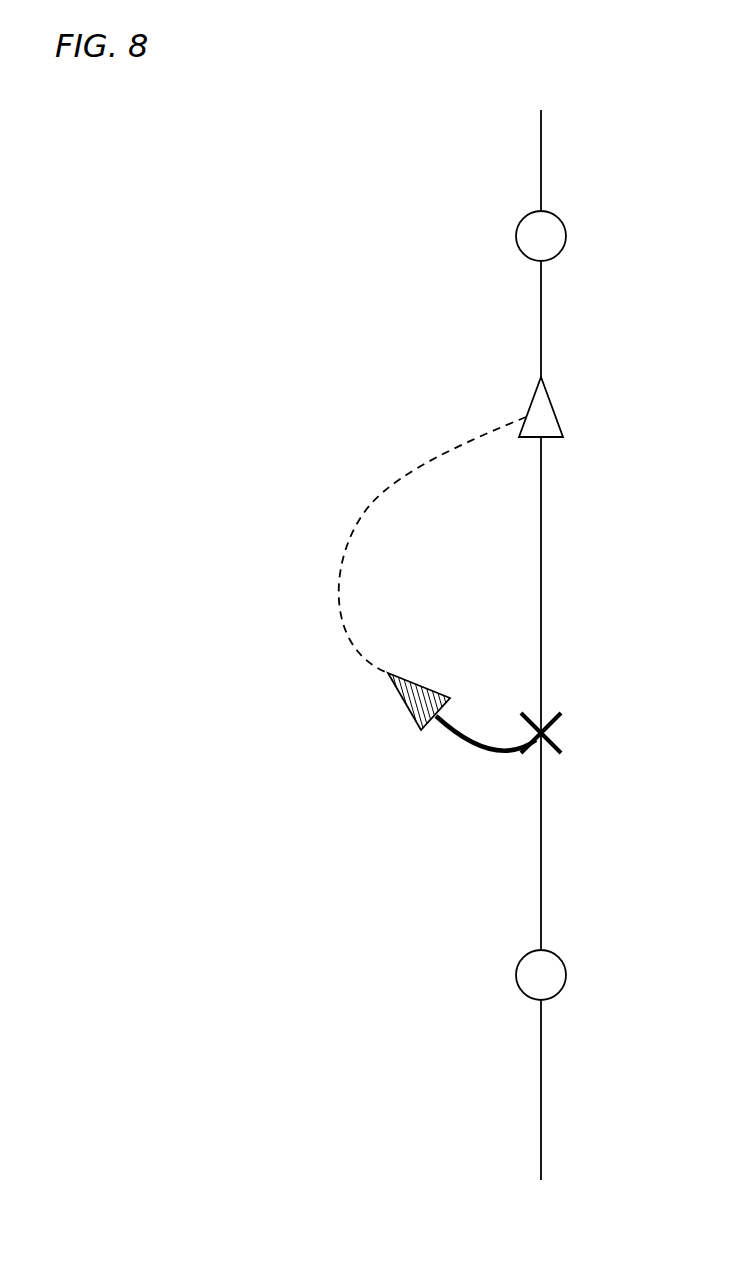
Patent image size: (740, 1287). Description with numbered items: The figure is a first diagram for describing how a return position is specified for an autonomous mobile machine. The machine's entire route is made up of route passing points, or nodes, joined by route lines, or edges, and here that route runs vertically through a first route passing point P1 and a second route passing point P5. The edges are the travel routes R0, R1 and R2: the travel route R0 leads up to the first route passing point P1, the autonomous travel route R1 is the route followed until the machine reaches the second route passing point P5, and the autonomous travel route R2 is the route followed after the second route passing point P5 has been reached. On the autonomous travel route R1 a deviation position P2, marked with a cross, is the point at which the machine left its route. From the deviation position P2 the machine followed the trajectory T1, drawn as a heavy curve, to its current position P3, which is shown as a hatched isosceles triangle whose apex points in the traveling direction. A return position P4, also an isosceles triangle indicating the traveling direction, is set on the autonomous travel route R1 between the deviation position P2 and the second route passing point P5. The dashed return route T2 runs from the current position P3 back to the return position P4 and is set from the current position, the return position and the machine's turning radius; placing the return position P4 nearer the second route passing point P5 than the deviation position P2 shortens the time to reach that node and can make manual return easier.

The travel route R0 is at (541, 1087).
The autonomous travel route R1 is at (541, 597).
The autonomous travel route R2 is at (541, 152).
The first route passing point P1 is at (566, 975).
The deviation position P2 is at (563, 742).
The current position P3 is at (403, 705).
The return position P4 is at (556, 410).
The second route passing point P5 is at (566, 236).
The trajectory T1 is at (466, 740).
The return route T2 is at (372, 497).